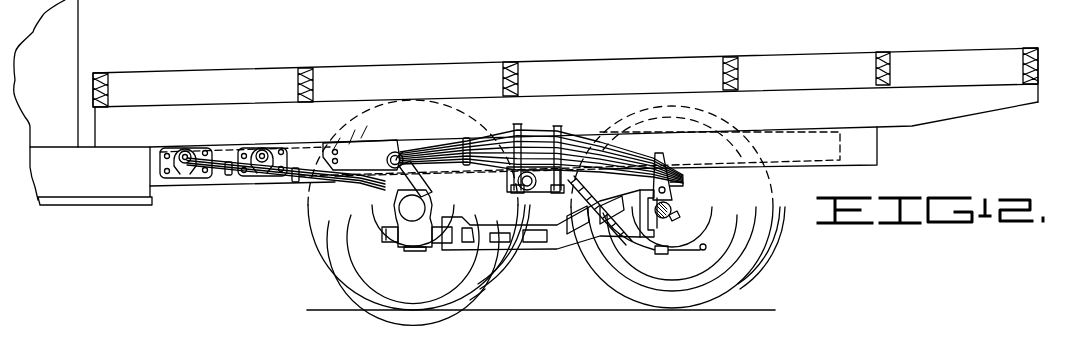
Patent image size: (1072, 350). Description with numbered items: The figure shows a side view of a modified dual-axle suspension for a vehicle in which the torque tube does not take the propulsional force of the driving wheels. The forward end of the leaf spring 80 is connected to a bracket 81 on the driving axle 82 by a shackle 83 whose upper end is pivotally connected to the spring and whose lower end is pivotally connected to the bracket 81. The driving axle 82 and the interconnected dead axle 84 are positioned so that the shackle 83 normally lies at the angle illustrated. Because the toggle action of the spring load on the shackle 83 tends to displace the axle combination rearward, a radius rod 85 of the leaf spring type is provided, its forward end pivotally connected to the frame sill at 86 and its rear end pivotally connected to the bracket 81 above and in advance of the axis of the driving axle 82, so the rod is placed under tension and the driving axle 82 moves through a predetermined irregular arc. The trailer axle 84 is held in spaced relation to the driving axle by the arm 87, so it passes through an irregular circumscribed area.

The leaf spring 80 is at (493, 141).
The bracket 81 is at (433, 200).
The driving axle 82 is at (417, 208).
The shackle 83 is at (380, 192).
The dead axle 84 is at (670, 201).
The radius rod 85 is at (231, 171).
The pivotal connection to frame sill 86 is at (185, 156).
The arm 87 is at (522, 250).